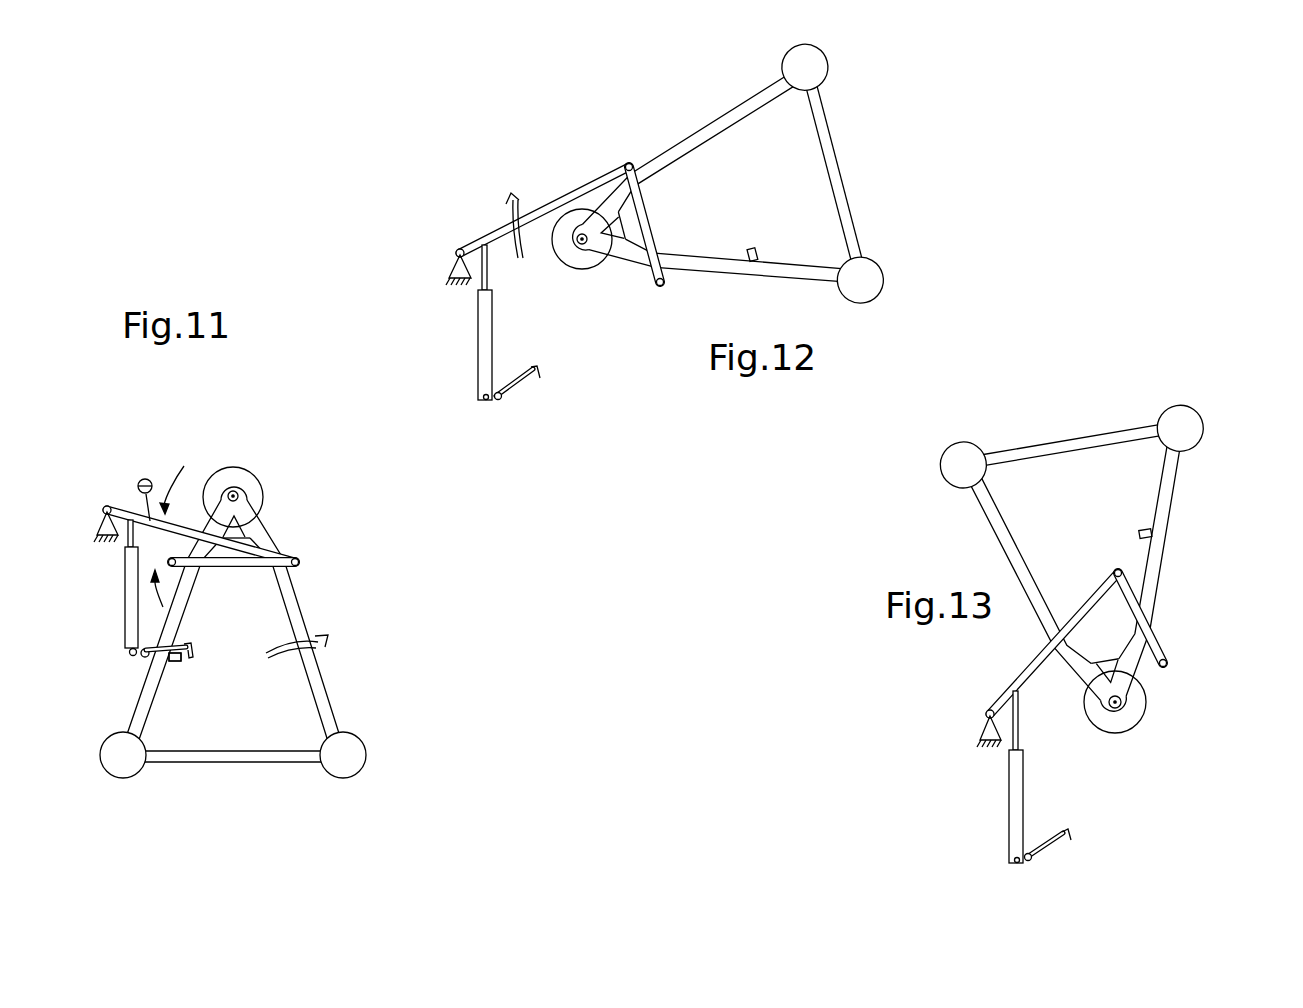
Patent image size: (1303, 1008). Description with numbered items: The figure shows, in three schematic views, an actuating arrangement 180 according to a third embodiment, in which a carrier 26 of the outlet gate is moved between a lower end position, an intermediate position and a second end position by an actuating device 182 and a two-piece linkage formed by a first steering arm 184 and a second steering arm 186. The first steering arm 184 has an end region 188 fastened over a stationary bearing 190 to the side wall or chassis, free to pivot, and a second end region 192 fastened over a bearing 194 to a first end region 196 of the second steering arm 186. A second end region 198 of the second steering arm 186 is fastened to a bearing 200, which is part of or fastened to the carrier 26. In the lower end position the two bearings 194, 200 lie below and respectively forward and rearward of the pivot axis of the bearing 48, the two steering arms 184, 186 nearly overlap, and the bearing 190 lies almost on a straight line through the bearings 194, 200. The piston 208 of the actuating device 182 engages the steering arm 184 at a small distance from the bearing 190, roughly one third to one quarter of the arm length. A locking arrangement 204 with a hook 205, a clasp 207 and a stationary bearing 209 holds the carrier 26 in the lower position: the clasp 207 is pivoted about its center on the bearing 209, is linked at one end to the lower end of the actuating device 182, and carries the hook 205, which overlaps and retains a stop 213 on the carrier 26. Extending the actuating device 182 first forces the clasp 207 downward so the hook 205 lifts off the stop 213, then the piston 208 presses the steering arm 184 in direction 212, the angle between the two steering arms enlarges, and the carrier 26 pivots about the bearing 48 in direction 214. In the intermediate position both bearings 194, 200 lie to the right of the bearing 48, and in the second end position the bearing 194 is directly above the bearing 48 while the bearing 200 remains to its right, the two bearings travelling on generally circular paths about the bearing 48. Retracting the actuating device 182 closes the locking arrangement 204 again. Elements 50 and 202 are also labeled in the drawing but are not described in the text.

In FIG. 11, the carrier 26 is at (345, 697).
In FIG. 11, the bearing 48 is at (240, 495).
In FIG. 12, the bearing 48 is at (575, 246).
In FIG. 13, the bearing 48 is at (1133, 727).
In FIG. 11, the roller surface 50 is at (237, 472).
In FIG. 13, the roller surface 50 is at (1115, 733).
In FIG. 11, the actuating arrangement 180 is at (172, 458).
In FIG. 11, the actuating device 182 is at (113, 630).
In FIG. 11, the first steering arm 184 is at (181, 522).
In FIG. 12, the first steering arm 184 is at (576, 190).
In FIG. 13, the first steering arm 184 is at (1037, 658).
In FIG. 11, the second steering arm 186 is at (246, 568).
In FIG. 12, the second steering arm 186 is at (643, 220).
In FIG. 13, the second steering arm 186 is at (1152, 620).
In FIG. 11, the end region 188 is at (117, 514).
In FIG. 11, the bearing 190 is at (90, 494).
In FIG. 12, the bearing 190 is at (458, 267).
In FIG. 13, the bearing 190 is at (989, 728).
In FIG. 11, the second end region 192 is at (292, 552).
In FIG. 12, the second end region 192 is at (625, 167).
In FIG. 11, the bearing 194 is at (299, 562).
In FIG. 12, the bearing 194 is at (628, 162).
In FIG. 13, the bearing 194 is at (1115, 571).
In FIG. 11, the first end region 196 is at (288, 571).
In FIG. 12, the first end region 196 is at (633, 165).
In FIG. 11, the second end region 198 is at (189, 567).
In FIG. 13, the second end region 198 is at (1155, 650).
In FIG. 11, the bearing 200 is at (173, 566).
In FIG. 12, the bearing 200 is at (665, 284).
In FIG. 13, the bearing 200 is at (1172, 652).
In FIG. 11, the lower pivot 202 is at (130, 651).
In FIG. 12, the locking arrangement 204 is at (556, 378).
In FIG. 12, the hook 205 is at (522, 385).
In FIG. 13, the hook 205 is at (1049, 843).
In FIG. 12, the clasp 207 is at (488, 402).
In FIG. 11, the piston 208 is at (125, 582).
In FIG. 12, the piston 208 is at (478, 335).
In FIG. 13, the piston 208 is at (1009, 795).
In FIG. 12, the bearing 209 is at (500, 402).
In FIG. 12, the direction 212 is at (524, 194).
In FIG. 11, the stop 213 is at (179, 661).
In FIG. 11, the direction 214 is at (272, 657).